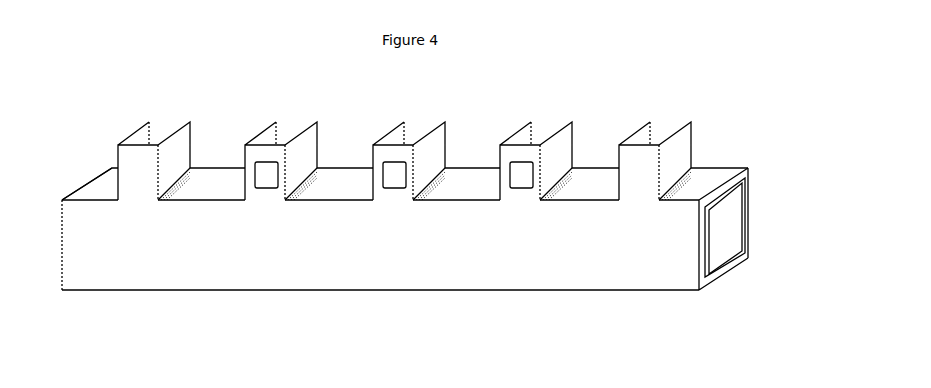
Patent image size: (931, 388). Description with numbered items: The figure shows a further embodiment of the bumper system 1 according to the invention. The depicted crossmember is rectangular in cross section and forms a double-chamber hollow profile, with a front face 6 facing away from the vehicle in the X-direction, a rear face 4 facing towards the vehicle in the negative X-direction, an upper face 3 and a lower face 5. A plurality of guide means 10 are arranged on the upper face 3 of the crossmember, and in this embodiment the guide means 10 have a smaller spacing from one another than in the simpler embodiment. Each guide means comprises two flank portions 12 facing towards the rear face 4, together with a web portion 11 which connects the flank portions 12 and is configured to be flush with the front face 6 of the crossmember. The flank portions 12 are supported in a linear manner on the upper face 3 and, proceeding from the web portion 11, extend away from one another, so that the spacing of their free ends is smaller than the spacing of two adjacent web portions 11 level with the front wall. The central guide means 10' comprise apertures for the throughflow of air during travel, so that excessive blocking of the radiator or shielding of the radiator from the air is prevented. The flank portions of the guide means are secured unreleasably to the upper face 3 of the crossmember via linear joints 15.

The bumper system 1 is at (421, 207).
The upper face 3 is at (105, 192).
The rear face 4 is at (747, 215).
The lower face 5 is at (723, 273).
The front face 6 is at (441, 259).
The guide means 10 is at (177, 122).
The central guide means 10' is at (536, 196).
The web portion 11 is at (262, 192).
The flank portion 12 is at (173, 147).
The linear joint 15 is at (562, 187).